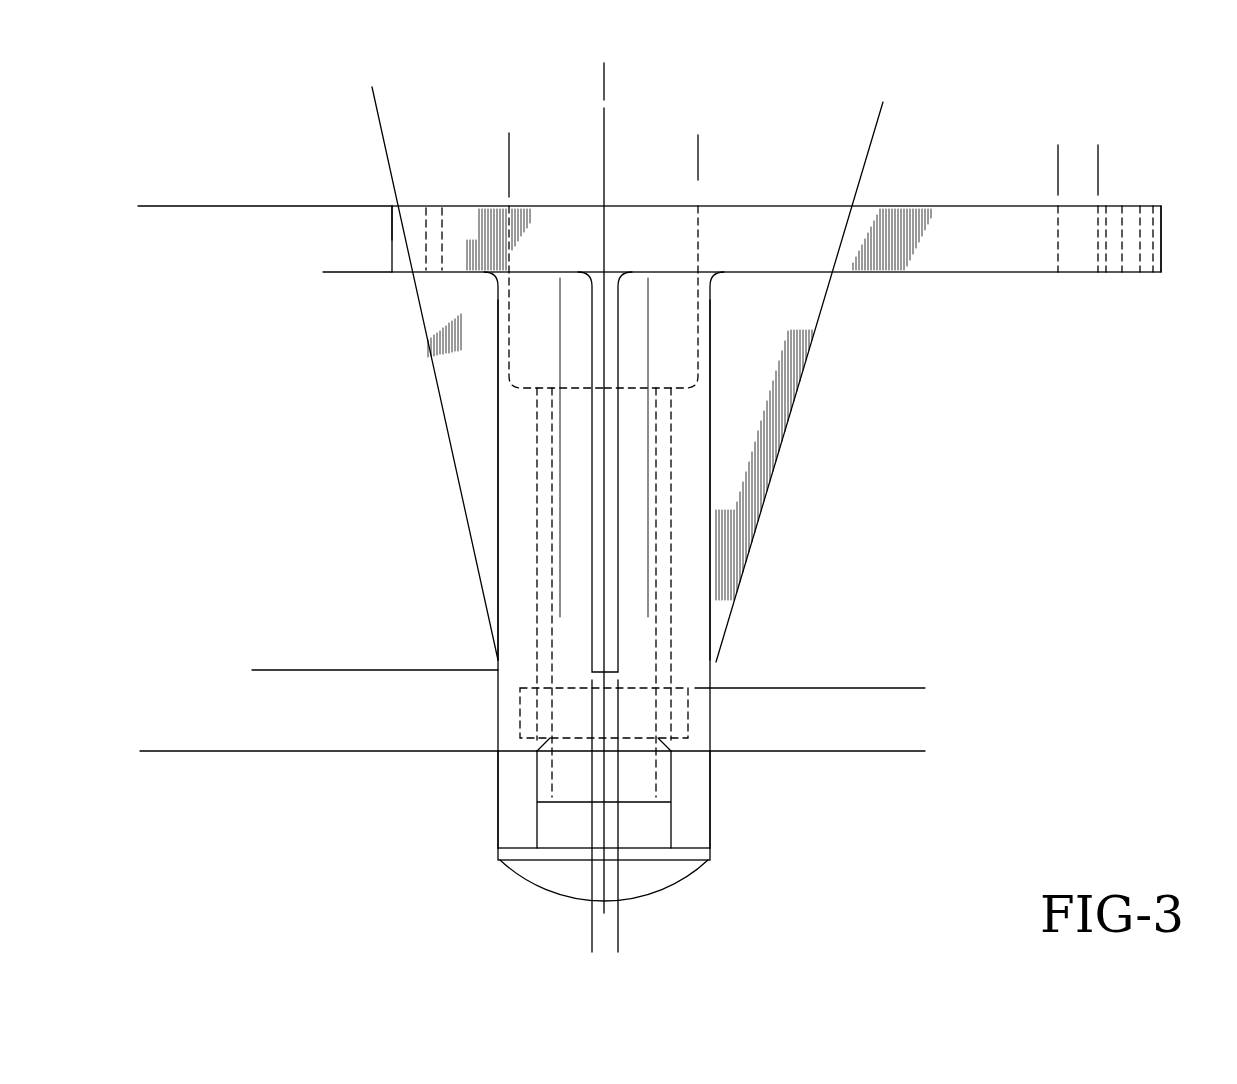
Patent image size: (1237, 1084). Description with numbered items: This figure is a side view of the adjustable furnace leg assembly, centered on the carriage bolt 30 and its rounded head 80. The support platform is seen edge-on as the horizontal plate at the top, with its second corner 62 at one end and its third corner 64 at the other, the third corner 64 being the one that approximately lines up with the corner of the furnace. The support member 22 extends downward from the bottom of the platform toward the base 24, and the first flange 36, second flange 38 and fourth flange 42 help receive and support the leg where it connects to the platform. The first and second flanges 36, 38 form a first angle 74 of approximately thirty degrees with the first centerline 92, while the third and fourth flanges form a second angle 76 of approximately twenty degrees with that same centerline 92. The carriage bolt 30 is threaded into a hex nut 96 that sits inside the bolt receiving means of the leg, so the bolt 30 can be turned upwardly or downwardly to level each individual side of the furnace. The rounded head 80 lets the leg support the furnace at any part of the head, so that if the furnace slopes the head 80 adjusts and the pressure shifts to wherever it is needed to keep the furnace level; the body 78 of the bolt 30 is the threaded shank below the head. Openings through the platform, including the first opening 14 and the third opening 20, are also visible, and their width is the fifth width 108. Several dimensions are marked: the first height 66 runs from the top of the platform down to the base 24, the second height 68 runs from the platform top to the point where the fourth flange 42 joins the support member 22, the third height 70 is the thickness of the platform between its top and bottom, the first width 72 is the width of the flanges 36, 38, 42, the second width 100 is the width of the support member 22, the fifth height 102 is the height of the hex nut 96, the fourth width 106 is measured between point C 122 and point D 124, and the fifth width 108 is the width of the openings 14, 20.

The first opening 14 is at (438, 208).
The third opening 20 is at (1080, 260).
The support member 22 is at (710, 343).
The base 24 is at (696, 752).
The carriage bolt 30 is at (467, 868).
The first flange 36 is at (597, 525).
The second flange 38 is at (810, 343).
The fourth flange 42 is at (450, 452).
The second corner 62 is at (1164, 275).
The third corner 64 is at (390, 203).
The height H1 66 is at (166, 206).
The height H2 68 is at (276, 206).
The height H3 70 is at (349, 206).
The width W1 72 is at (540, 925).
The angle alpha-one 74 is at (604, 92).
The angle alpha-two 76 is at (383, 110).
The body of the bolt 78 is at (537, 773).
The rounded head 80 is at (678, 871).
The first centerline 92 is at (604, 68).
The hex nut 96 is at (690, 714).
The width W2 100 is at (498, 818).
The height H5 102 is at (898, 636).
The width W4 106 is at (698, 146).
The width W5 108 is at (1005, 172).
The point C 122 is at (509, 153).
The point D 124 is at (699, 152).